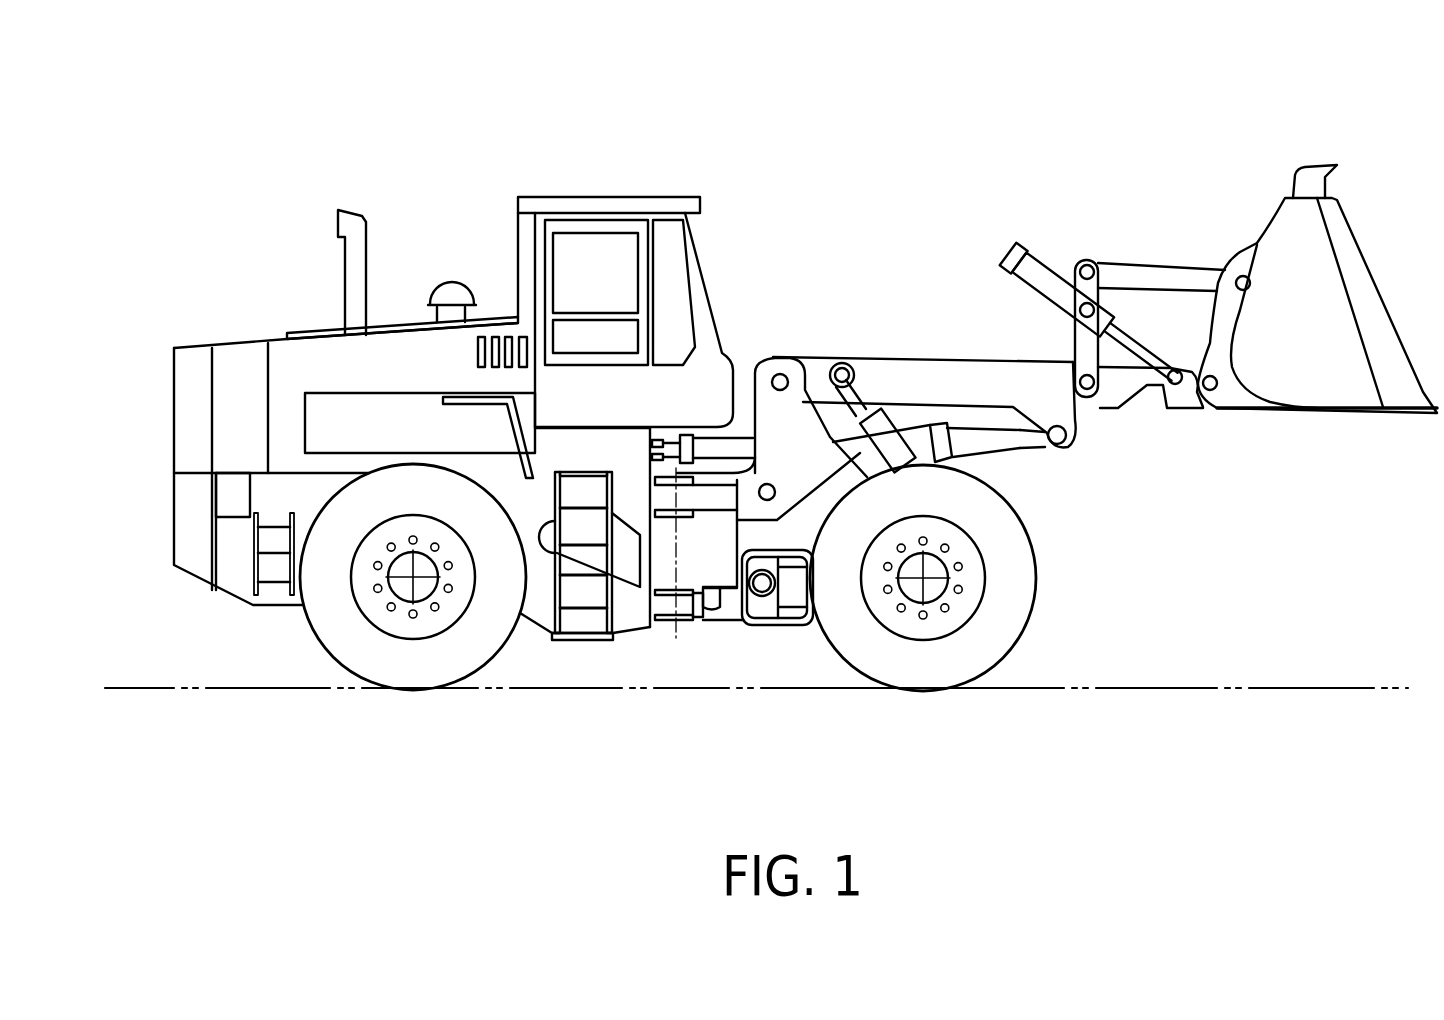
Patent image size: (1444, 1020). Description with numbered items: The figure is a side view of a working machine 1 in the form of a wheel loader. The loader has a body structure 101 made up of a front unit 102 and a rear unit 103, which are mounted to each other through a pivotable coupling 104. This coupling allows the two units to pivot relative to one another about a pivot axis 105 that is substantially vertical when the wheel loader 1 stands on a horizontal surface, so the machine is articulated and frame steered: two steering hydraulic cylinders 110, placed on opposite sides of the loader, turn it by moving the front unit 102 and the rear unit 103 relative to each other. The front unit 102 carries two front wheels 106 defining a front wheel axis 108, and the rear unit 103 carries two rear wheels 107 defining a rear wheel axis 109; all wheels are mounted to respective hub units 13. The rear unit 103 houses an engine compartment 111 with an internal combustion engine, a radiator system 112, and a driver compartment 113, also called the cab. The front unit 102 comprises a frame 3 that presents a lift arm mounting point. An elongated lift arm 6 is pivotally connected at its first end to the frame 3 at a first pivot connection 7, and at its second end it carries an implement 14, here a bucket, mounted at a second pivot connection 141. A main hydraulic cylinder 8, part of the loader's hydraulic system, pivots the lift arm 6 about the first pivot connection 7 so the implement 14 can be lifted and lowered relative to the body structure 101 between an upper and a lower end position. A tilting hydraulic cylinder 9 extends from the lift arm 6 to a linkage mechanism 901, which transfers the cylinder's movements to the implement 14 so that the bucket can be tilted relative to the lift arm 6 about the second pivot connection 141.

The working machine 1 is at (591, 148).
The frame 3 is at (797, 483).
The lift arm 6 is at (1073, 408).
The first pivot connection 7 is at (780, 376).
The main hydraulic cylinder 8 is at (997, 442).
The tilting hydraulic cylinder 9 is at (1010, 247).
The hub unit 13 is at (400, 585).
The implement 14 is at (1265, 215).
The body structure 101 is at (707, 645).
The front unit 102 is at (733, 608).
The rear unit 103 is at (228, 573).
The pivotable coupling 104 is at (658, 495).
The pivot axis 105 is at (688, 627).
The front wheels 106 is at (903, 657).
The rear wheels 107 is at (387, 655).
The front wheel axis 108 is at (937, 607).
The rear wheel axis 109 is at (425, 593).
The steering hydraulic cylinders 110 is at (726, 453).
The engine compartment 111 is at (231, 279).
The radiator system 112 is at (146, 385).
The driver compartment 113 is at (698, 253).
The second pivot connection 141 is at (1230, 408).
The linkage mechanism 901 is at (1155, 278).